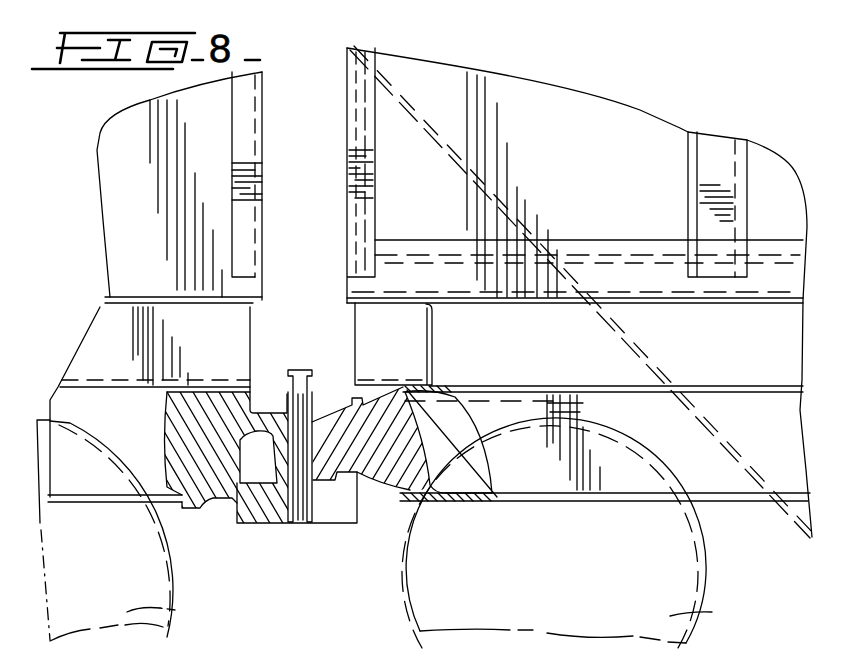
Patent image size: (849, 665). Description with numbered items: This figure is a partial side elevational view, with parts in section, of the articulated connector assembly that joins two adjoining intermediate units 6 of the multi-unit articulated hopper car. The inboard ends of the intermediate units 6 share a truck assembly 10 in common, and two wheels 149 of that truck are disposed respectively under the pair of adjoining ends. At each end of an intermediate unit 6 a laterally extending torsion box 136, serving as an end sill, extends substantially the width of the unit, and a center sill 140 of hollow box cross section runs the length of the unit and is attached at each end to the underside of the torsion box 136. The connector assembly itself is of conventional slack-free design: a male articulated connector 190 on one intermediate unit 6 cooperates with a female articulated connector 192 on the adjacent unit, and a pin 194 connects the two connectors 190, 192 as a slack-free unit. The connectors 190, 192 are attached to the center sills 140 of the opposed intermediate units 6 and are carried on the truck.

The intermediate unit 6 is at (132, 172).
The truck assembly 10 is at (271, 412).
The torsion box/end sill 136 is at (413, 360).
The center sill 140 is at (172, 512).
The wheel 149 is at (178, 610).
The male articulated connector 190 is at (343, 430).
The female articulated connector 192 is at (264, 485).
The pin 194 is at (302, 523).